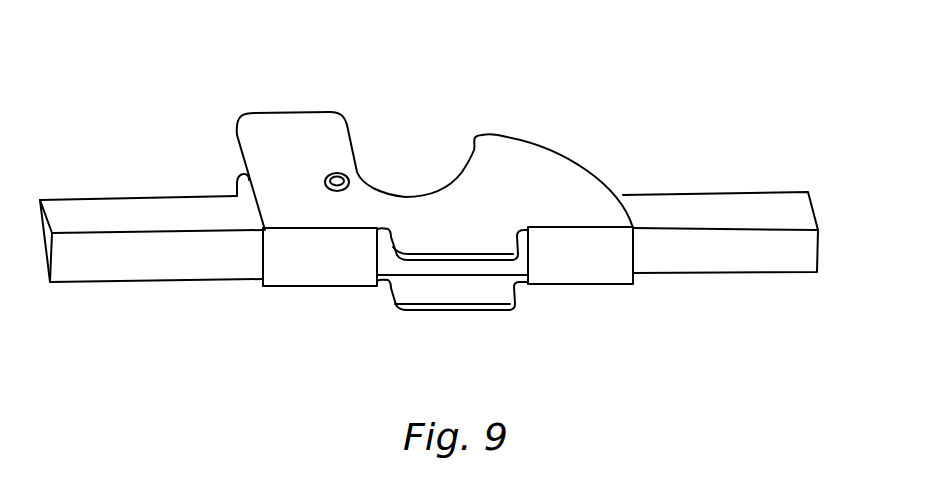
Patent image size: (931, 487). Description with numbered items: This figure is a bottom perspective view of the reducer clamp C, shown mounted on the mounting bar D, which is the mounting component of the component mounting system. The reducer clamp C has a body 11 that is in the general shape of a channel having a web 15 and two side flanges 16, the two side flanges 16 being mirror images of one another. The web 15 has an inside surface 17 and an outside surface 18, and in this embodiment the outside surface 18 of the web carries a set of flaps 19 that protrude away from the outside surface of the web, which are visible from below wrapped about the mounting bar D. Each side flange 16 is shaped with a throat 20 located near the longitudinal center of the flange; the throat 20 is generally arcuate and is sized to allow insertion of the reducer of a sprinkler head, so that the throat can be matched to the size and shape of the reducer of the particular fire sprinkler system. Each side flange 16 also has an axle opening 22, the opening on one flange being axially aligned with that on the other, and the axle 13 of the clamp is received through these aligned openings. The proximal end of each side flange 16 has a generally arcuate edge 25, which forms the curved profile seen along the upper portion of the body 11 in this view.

The body 11 is at (623, 197).
The axle 13 is at (373, 112).
The web 15 is at (633, 253).
The side flange 16 is at (507, 158).
The inside surface 17 is at (375, 260).
The outside surface 18 is at (595, 268).
The flaps 19 is at (503, 307).
The throat 20 is at (415, 152).
The axle opening 22 is at (346, 178).
The arcuate edge 25 is at (557, 148).
The reducer clamp C is at (328, 53).
The mounting bar D is at (730, 263).